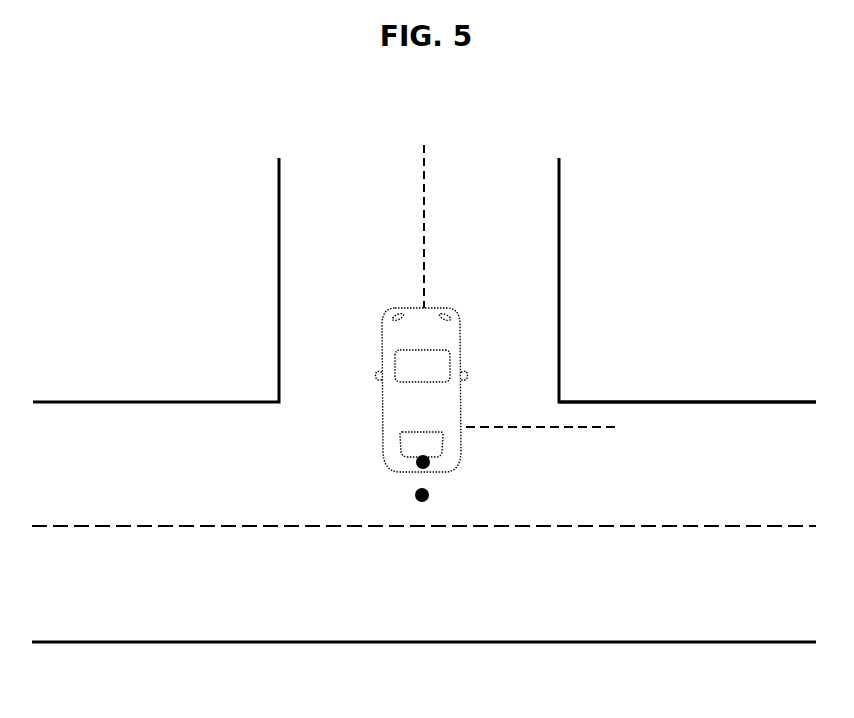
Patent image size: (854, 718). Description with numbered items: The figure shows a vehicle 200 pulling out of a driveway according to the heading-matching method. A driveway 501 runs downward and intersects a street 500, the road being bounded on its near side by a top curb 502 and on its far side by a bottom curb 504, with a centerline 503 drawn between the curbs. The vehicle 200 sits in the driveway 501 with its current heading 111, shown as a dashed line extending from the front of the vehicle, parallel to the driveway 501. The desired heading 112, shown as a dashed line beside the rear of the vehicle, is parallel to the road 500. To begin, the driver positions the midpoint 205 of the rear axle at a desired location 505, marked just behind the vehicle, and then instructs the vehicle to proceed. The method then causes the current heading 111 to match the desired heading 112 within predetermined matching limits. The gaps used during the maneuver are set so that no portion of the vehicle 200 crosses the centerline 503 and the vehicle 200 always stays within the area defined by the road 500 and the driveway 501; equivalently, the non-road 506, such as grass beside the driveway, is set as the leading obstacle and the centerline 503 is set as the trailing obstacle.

The current heading 111 is at (425, 218).
The desired heading 112 is at (530, 428).
The vehicle 200 is at (463, 340).
The midpoint of the rear axle 205 is at (422, 460).
The street 500 is at (637, 401).
The driveway 501 is at (563, 260).
The top curb 502 is at (733, 402).
The centerline 503 is at (530, 527).
The bottom curb 504 is at (530, 643).
The desired location 505 is at (424, 503).
The non-road 506 is at (692, 280).